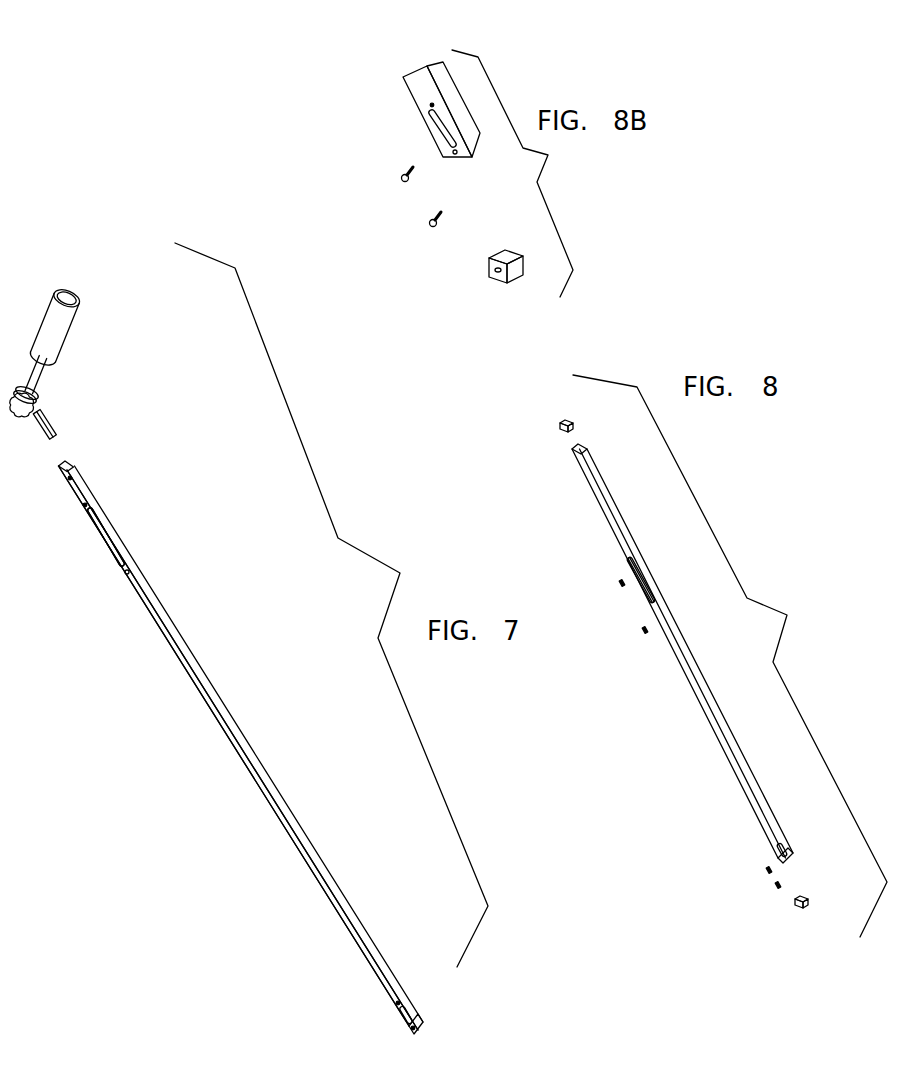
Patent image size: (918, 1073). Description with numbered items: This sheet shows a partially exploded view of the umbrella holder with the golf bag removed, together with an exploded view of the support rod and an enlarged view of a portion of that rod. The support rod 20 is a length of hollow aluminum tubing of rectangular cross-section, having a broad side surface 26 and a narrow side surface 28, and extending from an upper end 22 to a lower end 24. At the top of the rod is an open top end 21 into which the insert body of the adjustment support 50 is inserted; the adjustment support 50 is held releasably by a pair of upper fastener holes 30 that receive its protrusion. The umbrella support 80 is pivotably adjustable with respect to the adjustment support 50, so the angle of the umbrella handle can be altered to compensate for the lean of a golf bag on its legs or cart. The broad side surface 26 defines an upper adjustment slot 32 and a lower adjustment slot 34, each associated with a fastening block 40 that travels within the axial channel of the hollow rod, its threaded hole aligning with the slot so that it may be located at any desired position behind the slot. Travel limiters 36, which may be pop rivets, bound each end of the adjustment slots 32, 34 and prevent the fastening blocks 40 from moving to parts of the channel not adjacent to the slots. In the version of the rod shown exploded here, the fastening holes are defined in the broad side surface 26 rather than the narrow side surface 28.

In FIG. 7, the support rod 20 is at (295, 778).
In FIG. 7, the open top end 21 is at (70, 453).
In FIG. 8, the upper end 22 is at (570, 468).
In FIG. 8, the lower end 24 is at (758, 835).
In FIG. 7, the broad side surface 26 is at (143, 600).
In FIG. 7, the narrow side surface 28 is at (223, 708).
In FIG. 7, the upper fastener holes 30 is at (70, 478).
In FIG. 7, the upper adjustment slot 32 is at (112, 547).
In FIG. 7, the lower adjustment slot 34 is at (407, 1010).
In FIG. 8B, the lower adjustment slot 34 is at (443, 128).
In FIG. 7, the travel limiters 36 is at (85, 505).
In FIG. 8B, the travel limiters 36 is at (432, 105).
In FIG. 8, the fastening block 40 is at (560, 418).
In FIG. 7, the adjustment support 50 is at (58, 423).
In FIG. 7, the umbrella support 80 is at (77, 333).